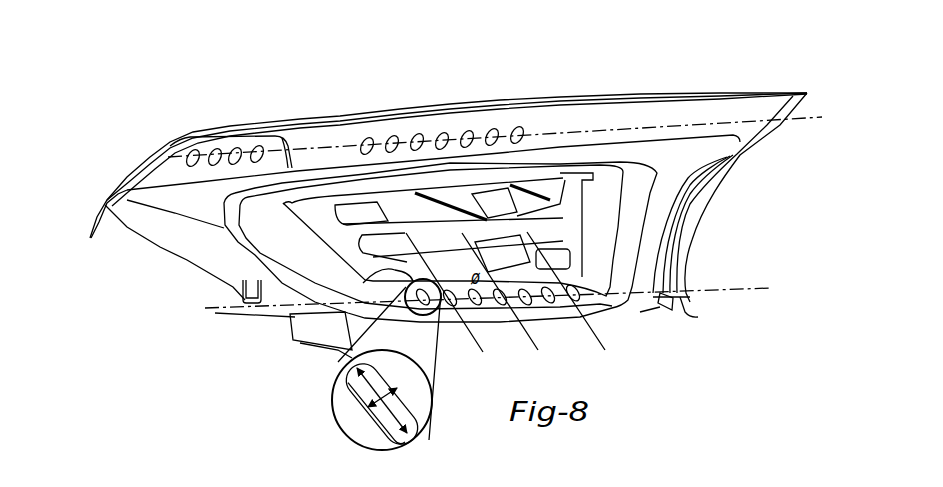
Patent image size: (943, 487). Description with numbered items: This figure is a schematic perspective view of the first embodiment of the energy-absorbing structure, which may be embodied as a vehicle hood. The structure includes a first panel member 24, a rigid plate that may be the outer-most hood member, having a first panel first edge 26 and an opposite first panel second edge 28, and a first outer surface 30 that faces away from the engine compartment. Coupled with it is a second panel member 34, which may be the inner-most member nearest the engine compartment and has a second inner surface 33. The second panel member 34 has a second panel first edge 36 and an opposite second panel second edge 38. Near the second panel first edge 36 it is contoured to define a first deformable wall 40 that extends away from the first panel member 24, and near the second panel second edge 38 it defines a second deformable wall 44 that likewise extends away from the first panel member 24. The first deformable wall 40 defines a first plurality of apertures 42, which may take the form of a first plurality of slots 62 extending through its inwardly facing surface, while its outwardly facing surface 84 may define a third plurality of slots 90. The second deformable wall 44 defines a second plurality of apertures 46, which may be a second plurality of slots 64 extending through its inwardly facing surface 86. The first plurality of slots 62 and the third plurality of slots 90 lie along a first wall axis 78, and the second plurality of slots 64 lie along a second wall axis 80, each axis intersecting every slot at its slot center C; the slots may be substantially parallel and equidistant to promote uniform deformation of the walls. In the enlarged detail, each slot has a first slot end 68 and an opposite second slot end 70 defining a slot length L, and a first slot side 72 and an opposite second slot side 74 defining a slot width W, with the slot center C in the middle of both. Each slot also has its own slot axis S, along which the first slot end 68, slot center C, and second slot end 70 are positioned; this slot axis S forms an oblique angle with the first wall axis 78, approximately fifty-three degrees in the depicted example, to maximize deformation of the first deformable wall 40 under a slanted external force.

The first panel member 24 is at (554, 90).
The first panel first edge 26 is at (130, 171).
The first panel second edge 28 is at (698, 317).
The first outer surface 30 is at (95, 212).
The second inner surface 33 is at (664, 233).
The second panel member 34 is at (738, 159).
The second panel first edge 36 is at (677, 97).
The second panel second edge 38 is at (674, 312).
The first deformable wall 40 is at (627, 127).
The first plurality of apertures 42 is at (355, 123).
The second deformable wall 44 is at (612, 310).
The second plurality of apertures 46 is at (499, 324).
The first plurality of slots 62 is at (385, 133).
The second plurality of slots 64 is at (541, 305).
The first slot end 68 is at (352, 361).
The second slot end 70 is at (382, 420).
The first slot side 72 is at (363, 445).
The second slot side 74 is at (402, 420).
The first wall axis 78 is at (166, 152).
The second wall axis 80 is at (218, 310).
The outwardly facing surface 84 is at (155, 191).
The inwardly facing surface 86 is at (596, 287).
The third plurality of slots 90 is at (348, 145).
The slot axis S is at (510, 299).
The slot length L is at (382, 398).
The slot width W is at (366, 411).
The slot center C is at (366, 425).